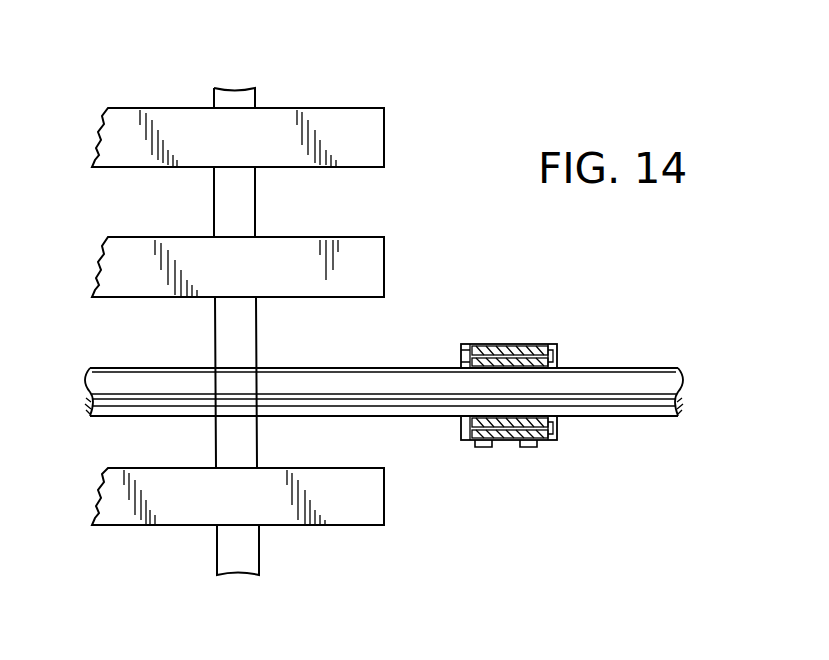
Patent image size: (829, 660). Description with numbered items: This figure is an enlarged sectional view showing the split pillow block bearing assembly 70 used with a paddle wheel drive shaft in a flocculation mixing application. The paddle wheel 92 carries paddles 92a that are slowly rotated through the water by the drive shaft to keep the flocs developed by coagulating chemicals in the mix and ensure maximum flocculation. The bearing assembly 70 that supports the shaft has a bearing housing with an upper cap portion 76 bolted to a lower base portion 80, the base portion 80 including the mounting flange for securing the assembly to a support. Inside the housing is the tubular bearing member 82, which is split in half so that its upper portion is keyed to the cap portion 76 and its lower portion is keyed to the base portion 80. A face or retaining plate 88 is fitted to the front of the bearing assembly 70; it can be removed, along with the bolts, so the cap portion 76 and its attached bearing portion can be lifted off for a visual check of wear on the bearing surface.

The paddle wheel 92 is at (120, 86).
The paddle 92a is at (355, 113).
The bearing assembly 70 is at (511, 414).
The upper cap portion 76 is at (538, 345).
The tubular bearing member 82 is at (490, 360).
The retaining plate 88 is at (462, 357).
The lower base portion 80 is at (500, 441).